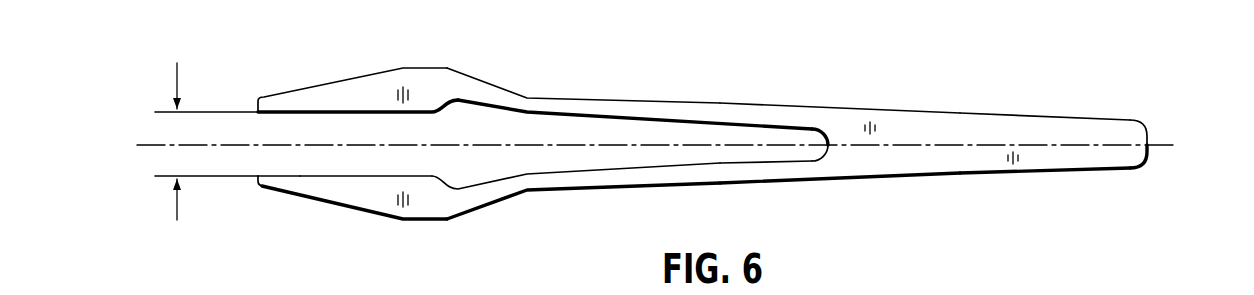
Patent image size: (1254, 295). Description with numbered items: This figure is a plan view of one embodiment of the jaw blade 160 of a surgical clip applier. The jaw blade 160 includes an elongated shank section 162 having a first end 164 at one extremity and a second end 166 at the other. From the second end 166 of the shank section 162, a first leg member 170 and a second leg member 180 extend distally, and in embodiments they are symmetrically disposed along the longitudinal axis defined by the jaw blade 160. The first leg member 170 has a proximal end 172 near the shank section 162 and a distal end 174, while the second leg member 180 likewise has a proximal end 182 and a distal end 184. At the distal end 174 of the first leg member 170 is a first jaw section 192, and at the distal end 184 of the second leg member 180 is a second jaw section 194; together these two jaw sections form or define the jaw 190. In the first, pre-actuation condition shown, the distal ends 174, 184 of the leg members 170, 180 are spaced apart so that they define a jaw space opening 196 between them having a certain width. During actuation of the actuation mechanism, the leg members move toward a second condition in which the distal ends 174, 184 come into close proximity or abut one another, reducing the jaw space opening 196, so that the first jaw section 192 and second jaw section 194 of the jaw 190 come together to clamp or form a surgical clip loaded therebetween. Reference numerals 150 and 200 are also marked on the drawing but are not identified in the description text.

The end effector assembly 150 is at (805, 292).
The jaw blade 160 is at (841, 47).
The shank section 162 is at (985, 128).
The first end 164 is at (1148, 138).
The second end 166 is at (832, 143).
The first leg member 170 is at (540, 105).
The proximal end 172 is at (810, 120).
The distal end 174 is at (272, 103).
The second leg member 180 is at (547, 183).
The proximal end 182 is at (800, 170).
The distal end 184 is at (272, 183).
The jaw 190 is at (241, 132).
The first jaw section 192 is at (322, 122).
The second jaw section 194 is at (280, 164).
The jaw space opening 196 is at (336, 164).
The tapered portion 200 is at (615, 132).